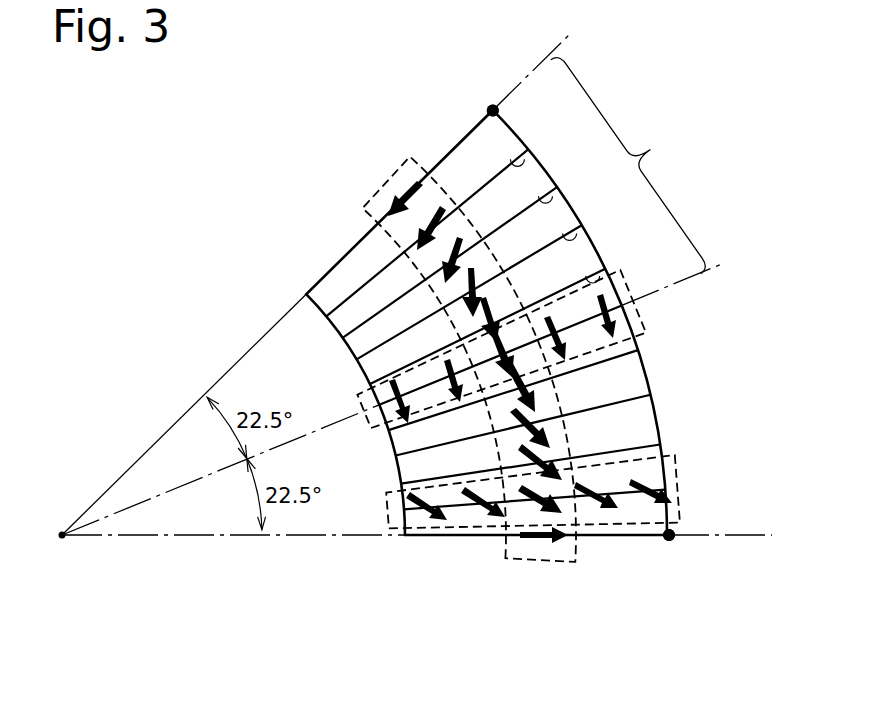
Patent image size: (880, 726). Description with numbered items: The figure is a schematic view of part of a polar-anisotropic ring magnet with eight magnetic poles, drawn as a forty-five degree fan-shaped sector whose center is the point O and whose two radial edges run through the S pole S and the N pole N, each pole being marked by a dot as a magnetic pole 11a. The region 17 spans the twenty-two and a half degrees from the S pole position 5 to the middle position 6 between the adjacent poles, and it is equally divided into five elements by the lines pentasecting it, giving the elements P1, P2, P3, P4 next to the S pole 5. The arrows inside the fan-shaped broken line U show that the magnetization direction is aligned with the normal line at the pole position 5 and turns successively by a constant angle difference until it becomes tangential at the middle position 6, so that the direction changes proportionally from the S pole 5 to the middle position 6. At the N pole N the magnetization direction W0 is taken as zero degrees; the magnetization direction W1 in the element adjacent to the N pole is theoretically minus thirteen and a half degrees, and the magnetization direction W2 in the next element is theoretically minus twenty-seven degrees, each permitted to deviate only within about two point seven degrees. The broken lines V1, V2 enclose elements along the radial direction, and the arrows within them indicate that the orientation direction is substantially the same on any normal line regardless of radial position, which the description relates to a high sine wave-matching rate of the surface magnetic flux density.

The S pole position 5 is at (471, 126).
The middle position 6 is at (694, 276).
The magnetic pole 11a is at (491, 105).
The region 17 is at (628, 166).
The S pole S is at (534, 78).
The N pole N is at (687, 540).
The center of rotation O is at (51, 545).
The fan-shaped broken line U is at (364, 200).
The broken line V1 is at (647, 331).
The broken line V2 is at (678, 455).
The magnetization direction W0 is at (540, 547).
The magnetization direction W1 is at (537, 500).
The magnetization direction W2 is at (530, 465).
The element P1 is at (532, 155).
The element P2 is at (558, 193).
The element P3 is at (580, 232).
The element P4 is at (602, 272).